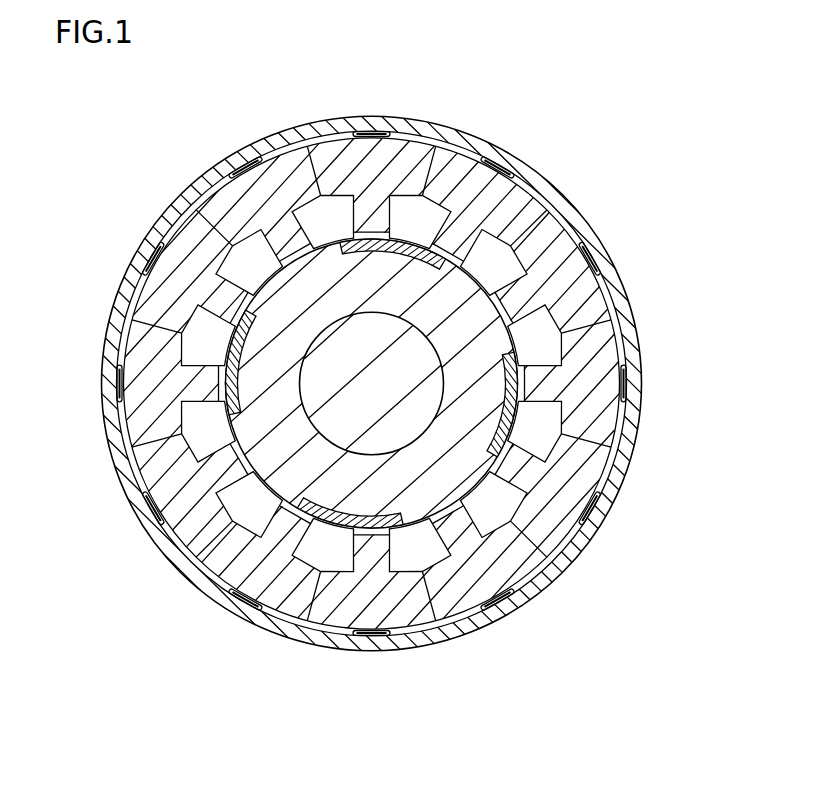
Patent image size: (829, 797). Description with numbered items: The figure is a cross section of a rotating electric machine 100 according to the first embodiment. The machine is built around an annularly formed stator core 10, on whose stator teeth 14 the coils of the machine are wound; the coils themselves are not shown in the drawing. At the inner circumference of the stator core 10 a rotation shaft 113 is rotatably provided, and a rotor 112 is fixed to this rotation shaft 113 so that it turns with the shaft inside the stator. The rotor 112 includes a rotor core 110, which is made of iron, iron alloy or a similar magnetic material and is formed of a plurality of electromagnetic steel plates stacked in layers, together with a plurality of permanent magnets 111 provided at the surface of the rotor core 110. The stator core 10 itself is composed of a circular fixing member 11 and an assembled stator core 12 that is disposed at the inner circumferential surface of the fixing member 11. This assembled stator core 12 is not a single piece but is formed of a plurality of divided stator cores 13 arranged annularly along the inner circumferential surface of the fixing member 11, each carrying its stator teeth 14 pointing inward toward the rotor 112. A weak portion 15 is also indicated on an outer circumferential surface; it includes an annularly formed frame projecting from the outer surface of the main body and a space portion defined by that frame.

The rotating electric machine 100 is at (168, 141).
The stator core 10 is at (567, 169).
The fixing member 11 is at (368, 130).
The assembled stator core 12 is at (583, 212).
The divided stator core 13 is at (522, 208).
The stator teeth 14 is at (440, 233).
The weak portion 15 is at (499, 167).
The rotor core 110 is at (487, 340).
The permanent magnets 111 is at (520, 410).
The rotor 112 is at (723, 325).
The rotation shaft 113 is at (402, 417).